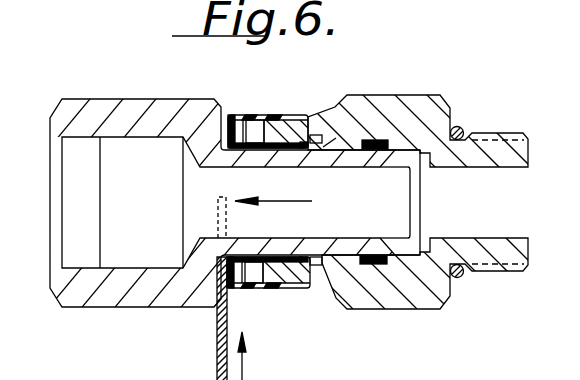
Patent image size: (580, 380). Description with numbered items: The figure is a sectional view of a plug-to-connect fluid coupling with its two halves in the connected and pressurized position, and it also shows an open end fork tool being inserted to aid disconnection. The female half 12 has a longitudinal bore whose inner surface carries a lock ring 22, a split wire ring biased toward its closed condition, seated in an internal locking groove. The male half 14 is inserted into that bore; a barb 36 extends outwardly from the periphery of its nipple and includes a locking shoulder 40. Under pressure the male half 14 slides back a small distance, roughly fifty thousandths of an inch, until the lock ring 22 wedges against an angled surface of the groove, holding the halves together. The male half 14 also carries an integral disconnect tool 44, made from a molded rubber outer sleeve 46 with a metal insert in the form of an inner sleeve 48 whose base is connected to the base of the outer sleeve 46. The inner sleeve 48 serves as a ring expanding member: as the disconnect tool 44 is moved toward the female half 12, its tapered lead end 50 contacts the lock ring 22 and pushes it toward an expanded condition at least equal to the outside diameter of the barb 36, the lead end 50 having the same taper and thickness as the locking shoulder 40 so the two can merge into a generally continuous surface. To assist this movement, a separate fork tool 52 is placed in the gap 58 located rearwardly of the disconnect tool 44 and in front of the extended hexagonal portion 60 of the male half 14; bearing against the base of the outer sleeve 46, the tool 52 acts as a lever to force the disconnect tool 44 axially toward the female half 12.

The female half 12 is at (415, 90).
The male half 14 is at (290, 203).
The lock ring 22 is at (309, 141).
The barb 36 is at (336, 266).
The locking shoulder 40 is at (316, 148).
The disconnect tool 44 is at (283, 110).
The outer sleeve 46 is at (266, 289).
The inner sleeve 48 is at (286, 147).
The lead end 50 is at (298, 148).
The tool 52 is at (217, 363).
The gap 58 is at (228, 146).
The extended hexagonal portion 60 is at (145, 98).